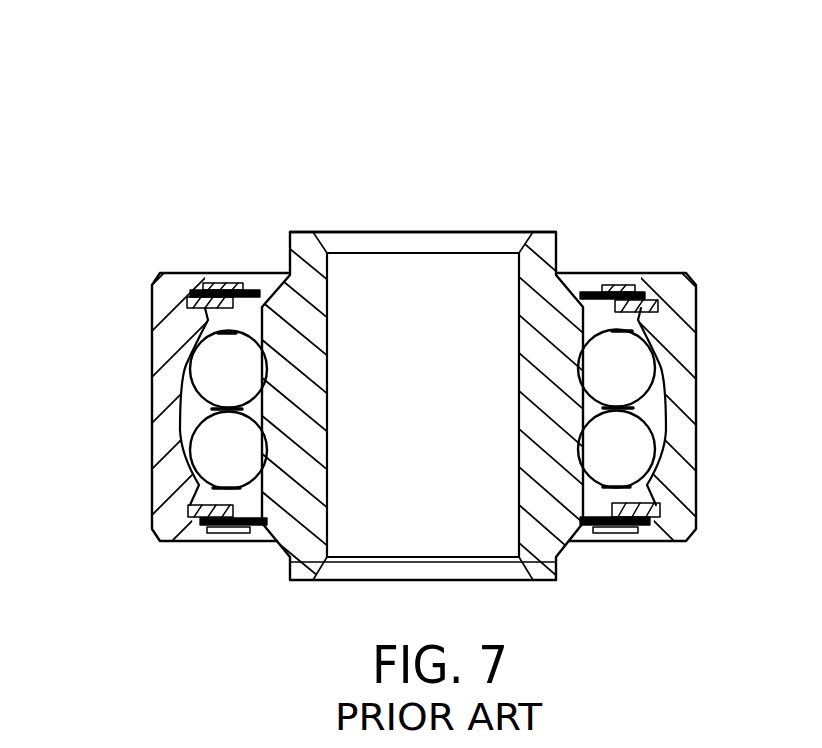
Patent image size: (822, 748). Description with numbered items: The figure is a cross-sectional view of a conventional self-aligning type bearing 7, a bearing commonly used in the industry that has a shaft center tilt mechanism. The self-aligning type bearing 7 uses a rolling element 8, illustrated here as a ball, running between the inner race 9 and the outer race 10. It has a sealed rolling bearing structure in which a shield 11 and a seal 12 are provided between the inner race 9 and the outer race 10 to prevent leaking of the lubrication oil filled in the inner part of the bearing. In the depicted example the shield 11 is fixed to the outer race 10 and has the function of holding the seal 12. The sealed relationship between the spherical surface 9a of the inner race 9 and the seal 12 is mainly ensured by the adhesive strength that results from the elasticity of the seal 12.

The self-aligning type bearing 7 is at (741, 136).
The rolling element 8 is at (200, 442).
The inner race 9 is at (291, 272).
The spherical surface 9a is at (289, 280).
The outer race 10 is at (157, 275).
The shield 11 is at (226, 272).
The seal 12 is at (257, 276).